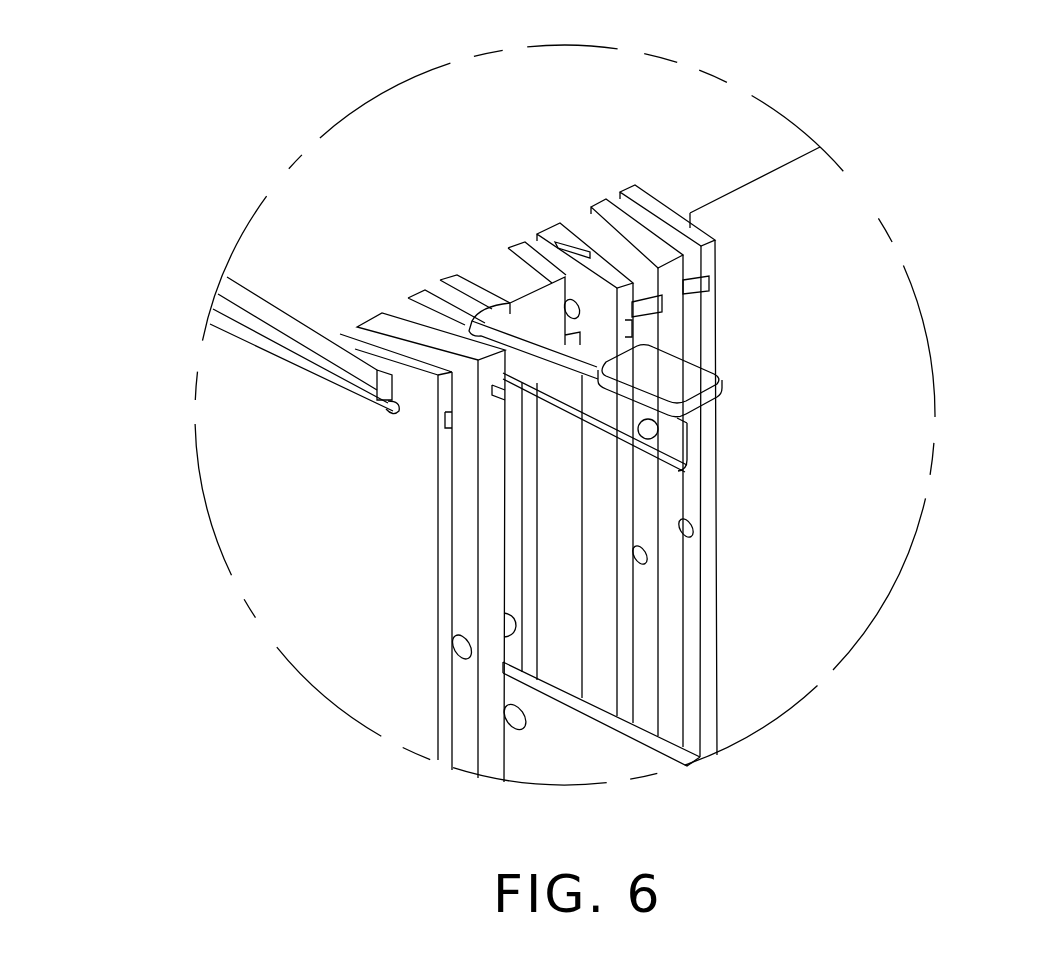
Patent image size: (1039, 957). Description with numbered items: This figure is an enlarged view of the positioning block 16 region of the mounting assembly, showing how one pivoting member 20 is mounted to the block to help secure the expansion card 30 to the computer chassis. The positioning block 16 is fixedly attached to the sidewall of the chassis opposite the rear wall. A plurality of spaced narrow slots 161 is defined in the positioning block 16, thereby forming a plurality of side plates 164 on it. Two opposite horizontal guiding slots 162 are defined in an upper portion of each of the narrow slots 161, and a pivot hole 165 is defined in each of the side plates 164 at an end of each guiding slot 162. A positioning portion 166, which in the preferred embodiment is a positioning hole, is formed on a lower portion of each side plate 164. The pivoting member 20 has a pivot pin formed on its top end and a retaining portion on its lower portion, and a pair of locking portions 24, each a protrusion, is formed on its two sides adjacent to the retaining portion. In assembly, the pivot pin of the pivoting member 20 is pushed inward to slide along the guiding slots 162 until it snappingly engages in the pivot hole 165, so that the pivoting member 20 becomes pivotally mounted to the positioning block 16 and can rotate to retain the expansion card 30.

The positioning block 16 is at (730, 147).
The pivoting member 20 is at (722, 393).
The locking portion 24 is at (650, 428).
The expansion card 30 is at (660, 757).
The narrow slot 161 is at (512, 495).
The guiding slot 162 is at (447, 424).
The side plate 164 is at (490, 477).
The pivot hole 165 is at (387, 407).
The positioning portion 166 is at (503, 633).